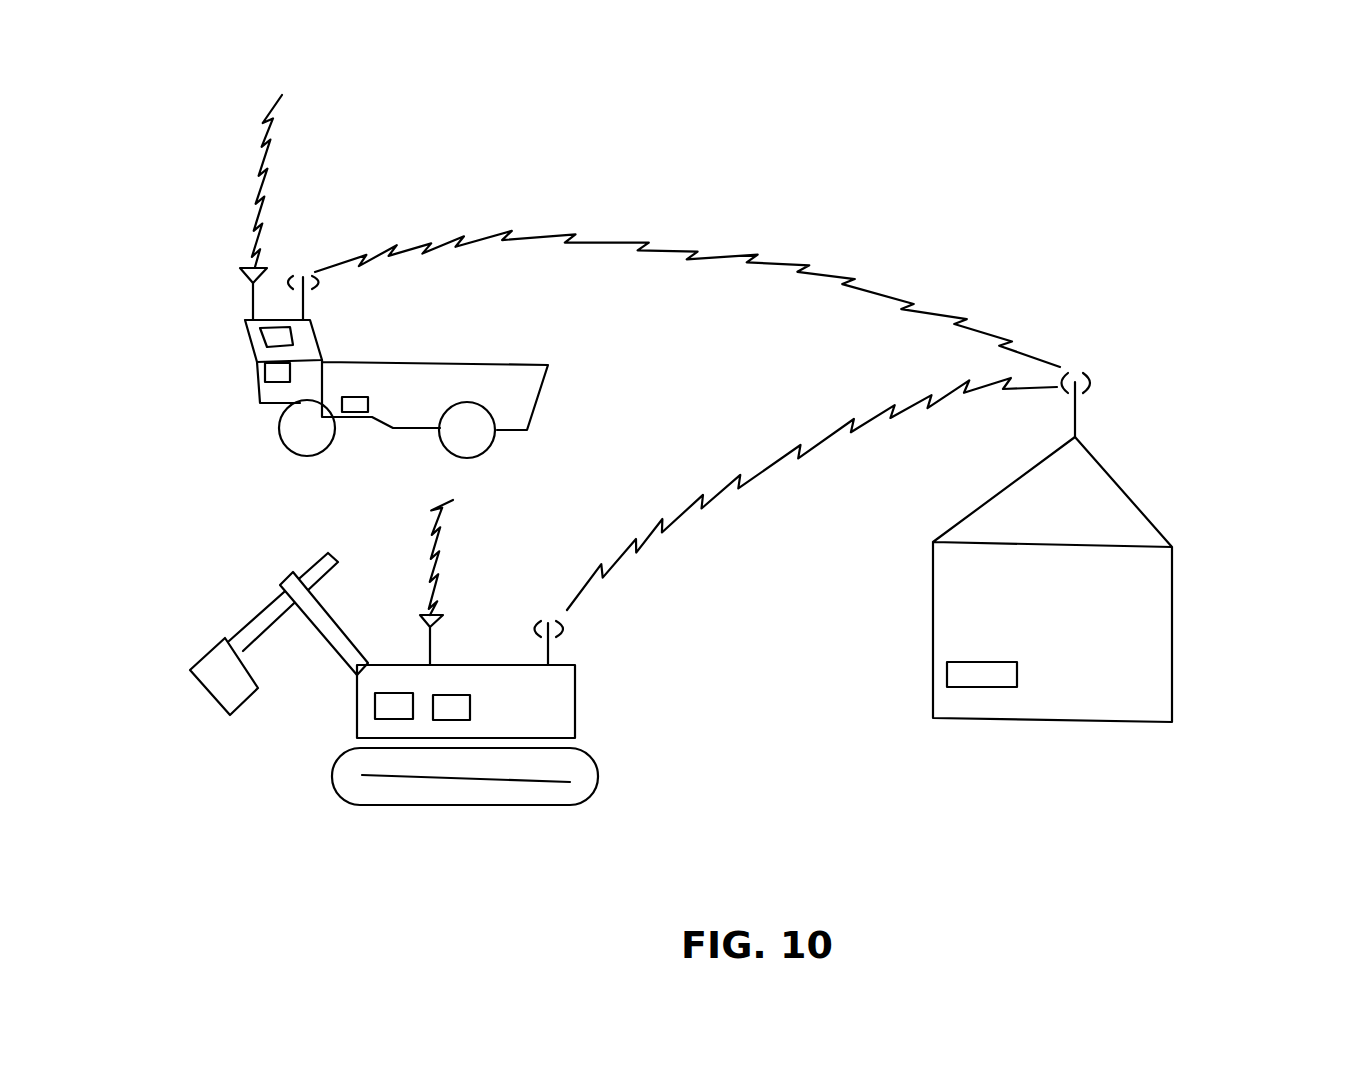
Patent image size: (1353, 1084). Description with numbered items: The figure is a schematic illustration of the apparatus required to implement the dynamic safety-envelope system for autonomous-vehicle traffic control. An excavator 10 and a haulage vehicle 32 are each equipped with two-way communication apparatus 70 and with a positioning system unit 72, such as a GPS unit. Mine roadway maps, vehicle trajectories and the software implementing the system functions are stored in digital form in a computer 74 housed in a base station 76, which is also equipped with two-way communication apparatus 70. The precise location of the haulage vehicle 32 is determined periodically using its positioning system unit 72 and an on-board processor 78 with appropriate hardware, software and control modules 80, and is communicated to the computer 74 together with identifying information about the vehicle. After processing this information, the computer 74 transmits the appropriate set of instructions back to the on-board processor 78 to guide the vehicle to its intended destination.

The excavator 10 is at (580, 694).
The haulage vehicle 32 is at (548, 383).
The two-way communication apparatus 70 is at (306, 297).
The positioning system unit 72 is at (252, 288).
The computer 74 is at (980, 672).
The base station 76 is at (1175, 625).
The on-board processor 78 is at (280, 370).
The control modules 80 is at (357, 408).